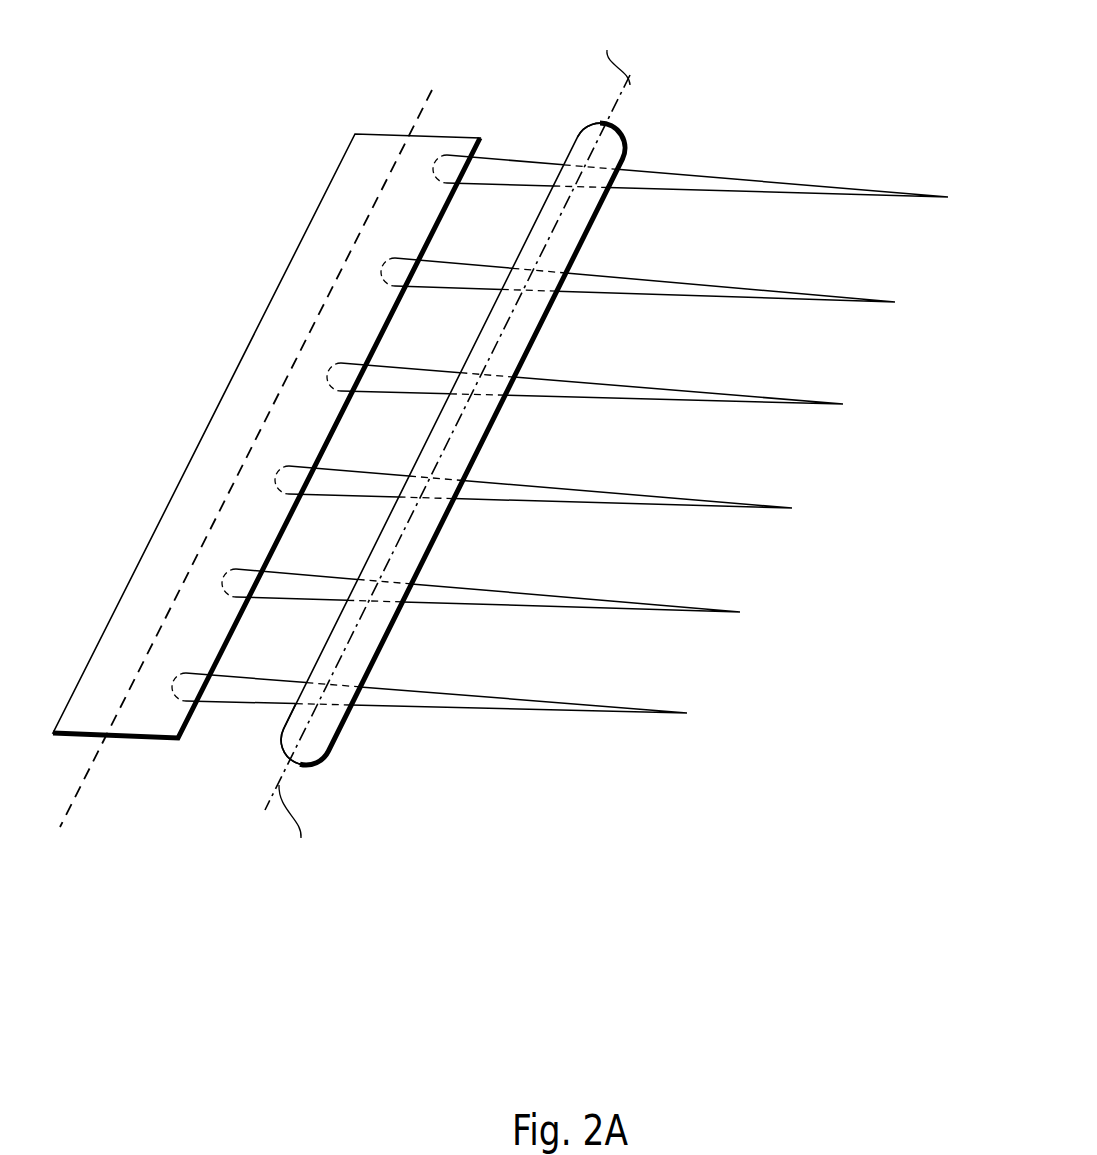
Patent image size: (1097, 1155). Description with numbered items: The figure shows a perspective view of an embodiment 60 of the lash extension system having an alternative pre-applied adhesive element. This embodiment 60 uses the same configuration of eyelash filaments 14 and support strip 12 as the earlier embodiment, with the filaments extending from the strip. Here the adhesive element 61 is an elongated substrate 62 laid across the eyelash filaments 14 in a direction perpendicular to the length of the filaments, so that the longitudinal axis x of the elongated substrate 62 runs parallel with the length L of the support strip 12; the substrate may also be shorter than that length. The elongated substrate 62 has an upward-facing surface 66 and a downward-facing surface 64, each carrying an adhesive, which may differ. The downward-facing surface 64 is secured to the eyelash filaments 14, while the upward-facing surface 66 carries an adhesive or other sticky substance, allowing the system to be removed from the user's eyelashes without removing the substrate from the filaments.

The support strip 12 is at (374, 143).
The eyelash filaments 14 is at (826, 190).
The embodiment of the lash extension system 60 is at (671, 814).
The adhesive element 61 is at (471, 448).
The elongated substrate 62 is at (326, 730).
The downward-facing surface 64 is at (288, 720).
The upward-facing surface 66 is at (584, 150).